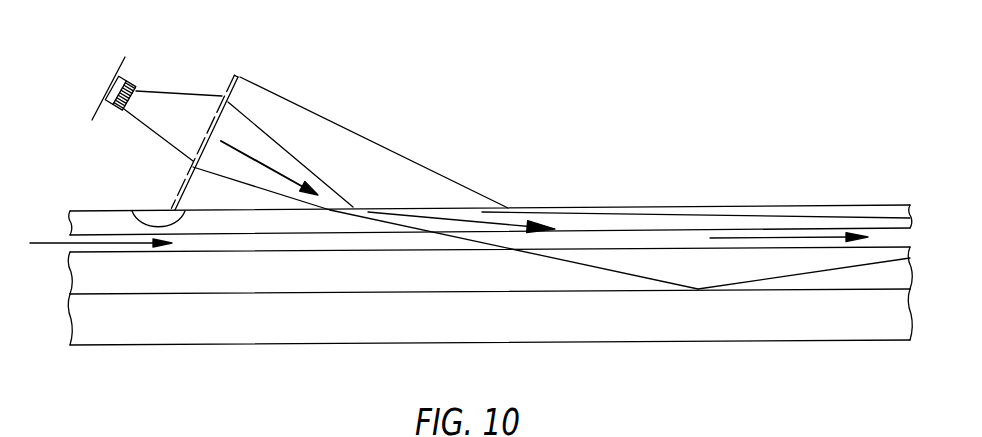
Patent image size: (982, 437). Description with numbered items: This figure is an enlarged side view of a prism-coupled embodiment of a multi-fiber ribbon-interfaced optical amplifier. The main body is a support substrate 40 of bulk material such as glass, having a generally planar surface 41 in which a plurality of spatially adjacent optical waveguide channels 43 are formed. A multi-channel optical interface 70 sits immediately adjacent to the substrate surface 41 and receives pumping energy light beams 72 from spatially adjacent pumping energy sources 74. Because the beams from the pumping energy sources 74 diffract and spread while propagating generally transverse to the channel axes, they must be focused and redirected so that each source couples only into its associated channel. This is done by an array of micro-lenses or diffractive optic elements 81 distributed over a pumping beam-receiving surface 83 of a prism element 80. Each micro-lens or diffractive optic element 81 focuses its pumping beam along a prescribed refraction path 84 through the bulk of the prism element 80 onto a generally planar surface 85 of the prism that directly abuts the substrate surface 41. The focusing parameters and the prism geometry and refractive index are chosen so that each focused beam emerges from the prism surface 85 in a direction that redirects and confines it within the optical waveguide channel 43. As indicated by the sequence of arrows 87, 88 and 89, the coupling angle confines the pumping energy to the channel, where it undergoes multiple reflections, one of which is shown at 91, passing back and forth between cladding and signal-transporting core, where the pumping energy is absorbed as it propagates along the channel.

The support substrate 40 is at (492, 345).
The planar surface 41 is at (663, 205).
The optical waveguide channels 43 is at (219, 283).
The multi-channel optical interface 70 is at (505, 116).
The pumping energy light beams 72 is at (165, 94).
The pumping energy sources 74 is at (115, 112).
The prism element 80 is at (335, 128).
The micro-lenses or diffractive optic elements 81 is at (196, 136).
The pumping beam-receiving surface 83 is at (239, 75).
The refraction path 84 is at (292, 163).
The planar surface of the prism 85 is at (138, 219).
The arrow 87 is at (243, 150).
The arrow 88 is at (385, 210).
The arrow 89 is at (755, 217).
The reflection 91 is at (700, 288).